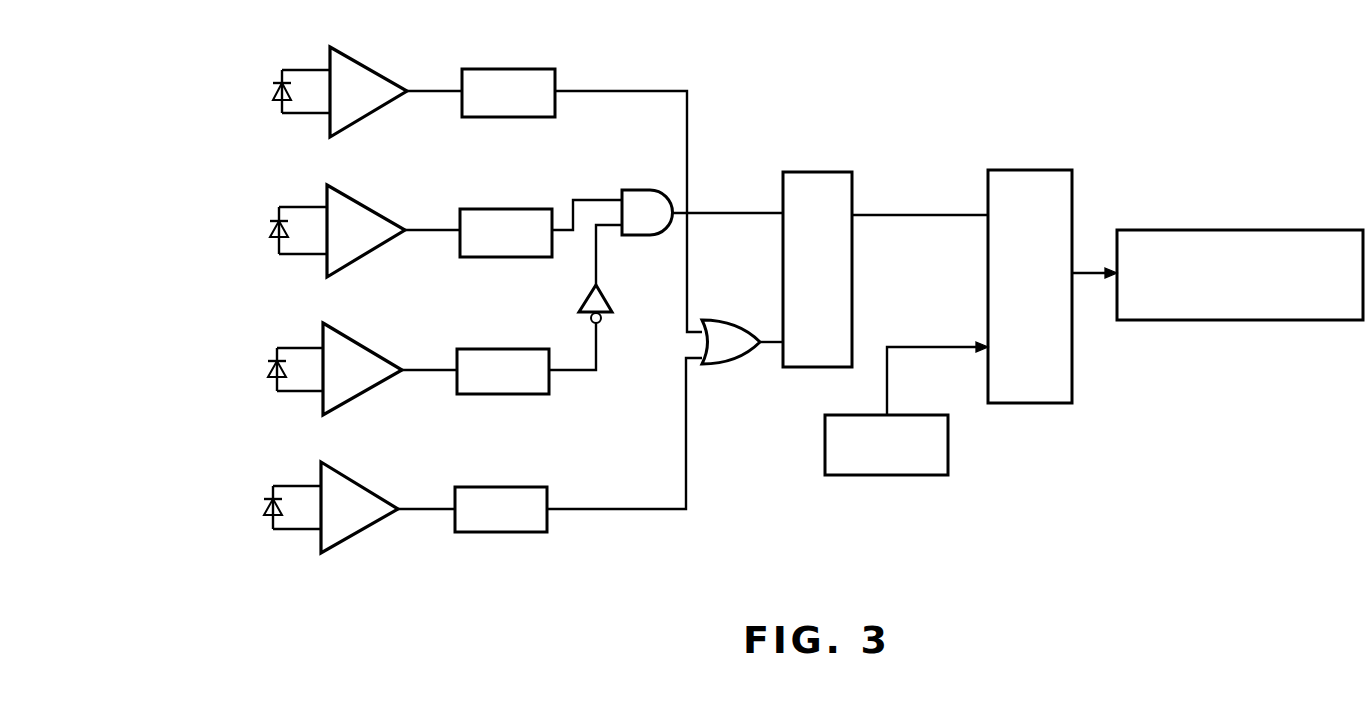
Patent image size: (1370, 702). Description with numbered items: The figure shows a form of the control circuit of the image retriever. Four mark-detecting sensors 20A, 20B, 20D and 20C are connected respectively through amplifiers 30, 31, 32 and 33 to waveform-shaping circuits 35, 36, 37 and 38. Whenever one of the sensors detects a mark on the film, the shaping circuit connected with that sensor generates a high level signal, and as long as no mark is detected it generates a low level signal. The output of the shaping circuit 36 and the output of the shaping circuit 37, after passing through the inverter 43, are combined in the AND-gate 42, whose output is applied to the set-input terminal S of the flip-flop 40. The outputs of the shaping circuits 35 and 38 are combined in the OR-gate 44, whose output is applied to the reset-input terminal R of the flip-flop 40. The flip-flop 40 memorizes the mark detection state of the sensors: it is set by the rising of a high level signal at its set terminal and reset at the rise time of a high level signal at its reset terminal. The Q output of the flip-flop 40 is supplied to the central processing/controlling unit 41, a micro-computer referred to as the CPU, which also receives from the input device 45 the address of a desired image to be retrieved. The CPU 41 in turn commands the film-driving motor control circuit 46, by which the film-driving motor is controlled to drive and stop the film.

The sensor 20A is at (272, 100).
The sensor 20B is at (270, 238).
The sensor 20C is at (265, 516).
The sensor 20D is at (268, 378).
The amplifier 30 is at (367, 63).
The amplifier 31 is at (365, 207).
The amplifier 32 is at (364, 347).
The amplifier 33 is at (365, 489).
The waveform-shaping circuit 35 is at (515, 68).
The waveform-shaping circuit 36 is at (505, 209).
The waveform-shaping circuit 37 is at (495, 349).
The waveform-shaping circuit 38 is at (505, 487).
The flip-flop 40 is at (817, 172).
The central processing/controlling unit 41 is at (1033, 170).
The AND-gate 42 is at (645, 190).
The inverter 43 is at (607, 303).
The OR-gate 44 is at (737, 364).
The input device 45 is at (927, 476).
The film-driving motor control circuit 46 is at (1280, 230).